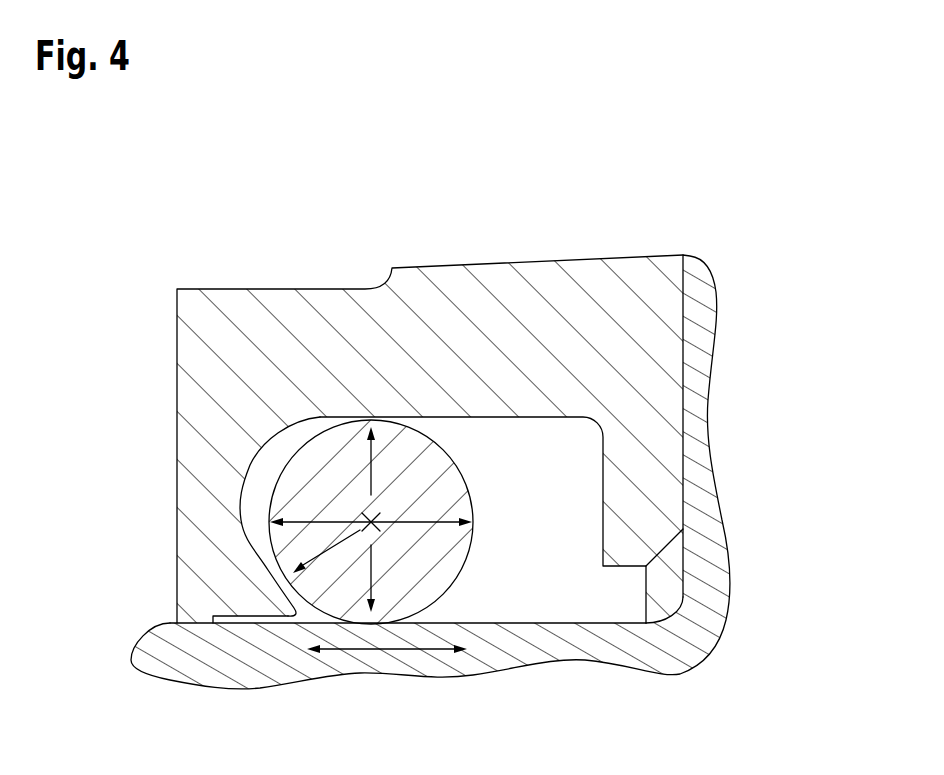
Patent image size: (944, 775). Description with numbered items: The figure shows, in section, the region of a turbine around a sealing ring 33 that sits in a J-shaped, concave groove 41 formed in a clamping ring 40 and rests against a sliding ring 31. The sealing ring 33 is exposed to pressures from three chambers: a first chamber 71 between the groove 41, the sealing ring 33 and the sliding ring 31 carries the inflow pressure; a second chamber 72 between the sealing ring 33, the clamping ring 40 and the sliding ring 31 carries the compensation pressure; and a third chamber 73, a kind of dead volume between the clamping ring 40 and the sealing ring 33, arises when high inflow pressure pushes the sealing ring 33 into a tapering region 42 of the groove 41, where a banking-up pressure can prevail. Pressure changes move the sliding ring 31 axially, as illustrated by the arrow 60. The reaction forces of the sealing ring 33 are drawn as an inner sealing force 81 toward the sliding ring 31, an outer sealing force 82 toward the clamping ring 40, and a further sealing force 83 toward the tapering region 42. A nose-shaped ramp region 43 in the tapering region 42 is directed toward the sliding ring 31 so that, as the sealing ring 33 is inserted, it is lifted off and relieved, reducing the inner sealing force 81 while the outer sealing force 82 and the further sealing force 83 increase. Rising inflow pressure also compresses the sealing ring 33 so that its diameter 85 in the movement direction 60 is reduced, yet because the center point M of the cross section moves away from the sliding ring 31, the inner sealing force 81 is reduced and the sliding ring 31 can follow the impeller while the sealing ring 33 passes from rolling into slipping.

The sliding ring 31 is at (645, 650).
The sealing ring 33 is at (408, 458).
The clamping ring 40 is at (488, 333).
The groove 41 is at (530, 420).
The tapering region 42 is at (262, 515).
The ramp region 43 is at (283, 598).
The arrow 60 is at (367, 652).
The first chamber 71 is at (540, 600).
The second chamber 72 is at (190, 614).
The third chamber 73 is at (290, 442).
The inner sealing force 81 is at (375, 576).
The outer sealing force 82 is at (363, 455).
The further sealing force 83 is at (323, 558).
The diameter 85 is at (428, 528).
The center point M is at (368, 512).